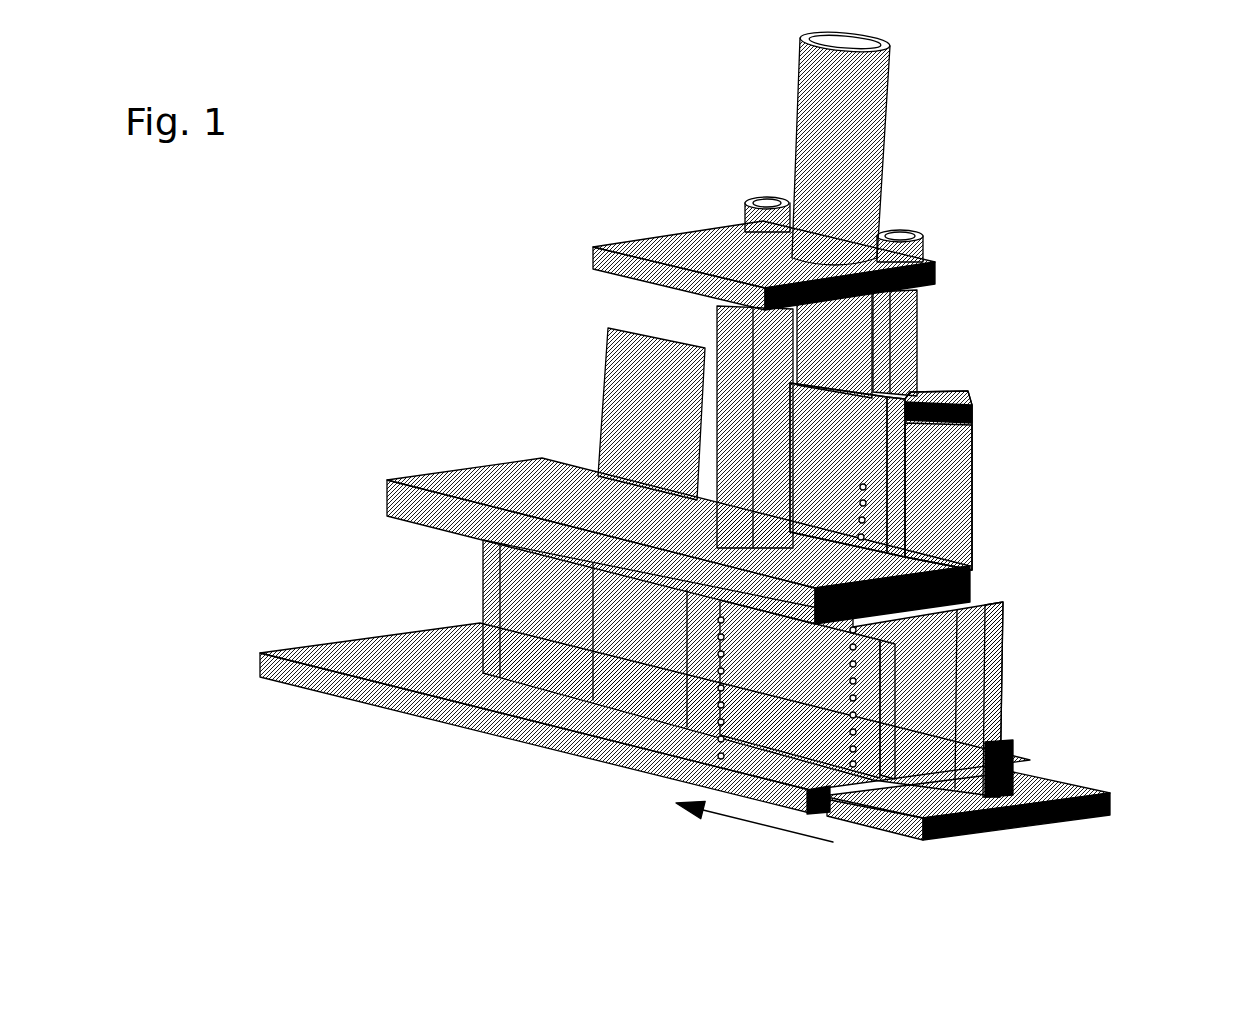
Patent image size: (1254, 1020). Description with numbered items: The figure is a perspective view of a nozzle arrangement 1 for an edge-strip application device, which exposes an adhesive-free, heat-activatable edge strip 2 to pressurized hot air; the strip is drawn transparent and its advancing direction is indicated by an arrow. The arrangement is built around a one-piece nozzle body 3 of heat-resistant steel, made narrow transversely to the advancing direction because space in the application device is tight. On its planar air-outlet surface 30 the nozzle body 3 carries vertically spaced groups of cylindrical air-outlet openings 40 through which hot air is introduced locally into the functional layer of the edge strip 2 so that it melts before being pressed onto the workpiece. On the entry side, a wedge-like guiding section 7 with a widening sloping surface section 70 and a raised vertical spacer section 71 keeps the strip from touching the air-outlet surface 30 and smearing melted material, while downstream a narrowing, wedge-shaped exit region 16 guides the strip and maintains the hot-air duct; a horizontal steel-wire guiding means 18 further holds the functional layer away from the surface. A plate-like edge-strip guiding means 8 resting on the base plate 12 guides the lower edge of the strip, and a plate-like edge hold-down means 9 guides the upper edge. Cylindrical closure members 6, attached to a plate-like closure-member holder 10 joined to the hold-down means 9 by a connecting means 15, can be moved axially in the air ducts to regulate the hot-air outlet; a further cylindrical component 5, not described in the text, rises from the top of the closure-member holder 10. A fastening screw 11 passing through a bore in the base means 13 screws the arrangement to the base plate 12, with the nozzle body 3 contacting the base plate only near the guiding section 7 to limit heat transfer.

The nozzle arrangement 1 is at (724, 435).
The edge strip 2 is at (500, 603).
The nozzle body 3 is at (865, 423).
The cylinder 5 is at (848, 127).
The closure member 6 is at (897, 317).
The guiding section 7 is at (928, 547).
The edge-strip guiding means 8 is at (707, 763).
The edge hold-down means 9 is at (510, 480).
The closure-member holder 10 is at (727, 248).
The fastening screw 11 is at (967, 723).
The base plate 12 is at (378, 658).
The base means 13 is at (1013, 765).
The connecting means 15 is at (735, 455).
The exit region 16 is at (635, 357).
The guiding means 18 is at (775, 680).
The air-outlet surface 30 is at (834, 495).
The air-outlet openings 40 is at (864, 520).
The sloping surface section 70 is at (952, 532).
The spacer section 71 is at (905, 447).